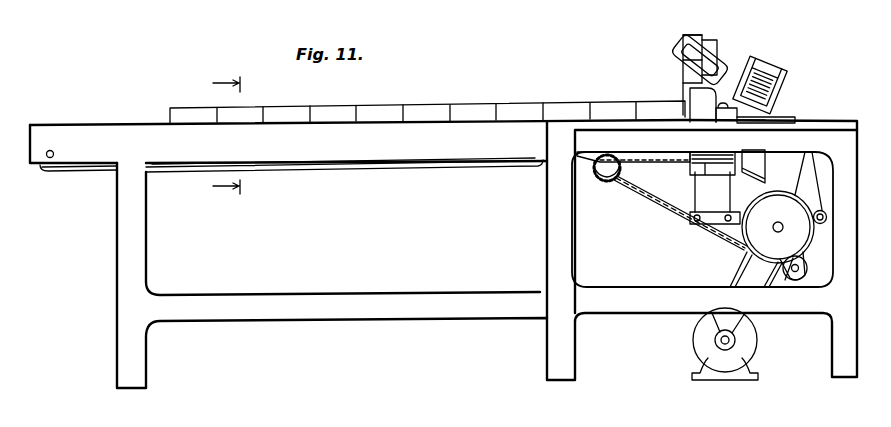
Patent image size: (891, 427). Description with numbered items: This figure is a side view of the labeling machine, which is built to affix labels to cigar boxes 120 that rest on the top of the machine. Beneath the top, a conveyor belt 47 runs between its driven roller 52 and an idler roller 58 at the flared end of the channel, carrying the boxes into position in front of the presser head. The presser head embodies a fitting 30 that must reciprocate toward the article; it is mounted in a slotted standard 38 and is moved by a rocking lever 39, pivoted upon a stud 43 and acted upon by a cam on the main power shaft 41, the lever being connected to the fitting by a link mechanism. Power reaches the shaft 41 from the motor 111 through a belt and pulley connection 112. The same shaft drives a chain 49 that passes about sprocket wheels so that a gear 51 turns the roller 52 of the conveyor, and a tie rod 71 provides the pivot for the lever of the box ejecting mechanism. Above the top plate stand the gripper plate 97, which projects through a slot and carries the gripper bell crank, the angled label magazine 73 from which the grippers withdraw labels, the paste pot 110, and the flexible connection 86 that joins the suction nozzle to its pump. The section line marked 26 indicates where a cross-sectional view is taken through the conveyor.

The section line 26 is at (239, 137).
The cigar boxes 120 is at (408, 106).
The conveyor belt 47 is at (391, 168).
The idler roller 58 is at (45, 171).
The plate 97 is at (706, 110).
The slotted standard 38 is at (683, 38).
The fitting 30 is at (720, 52).
The paste pot 110 is at (724, 103).
The label magazine 73 is at (776, 68).
The flexible connection 86 is at (785, 116).
The roller 52 is at (611, 160).
The gear 51 is at (600, 181).
The chain 49 is at (627, 190).
The rocking lever 39 is at (700, 224).
The main power shaft 41 is at (784, 227).
The stud 43 is at (826, 214).
The tie rod 71 is at (806, 268).
The belt and pulley connection 112 is at (731, 281).
The motor 111 is at (697, 338).